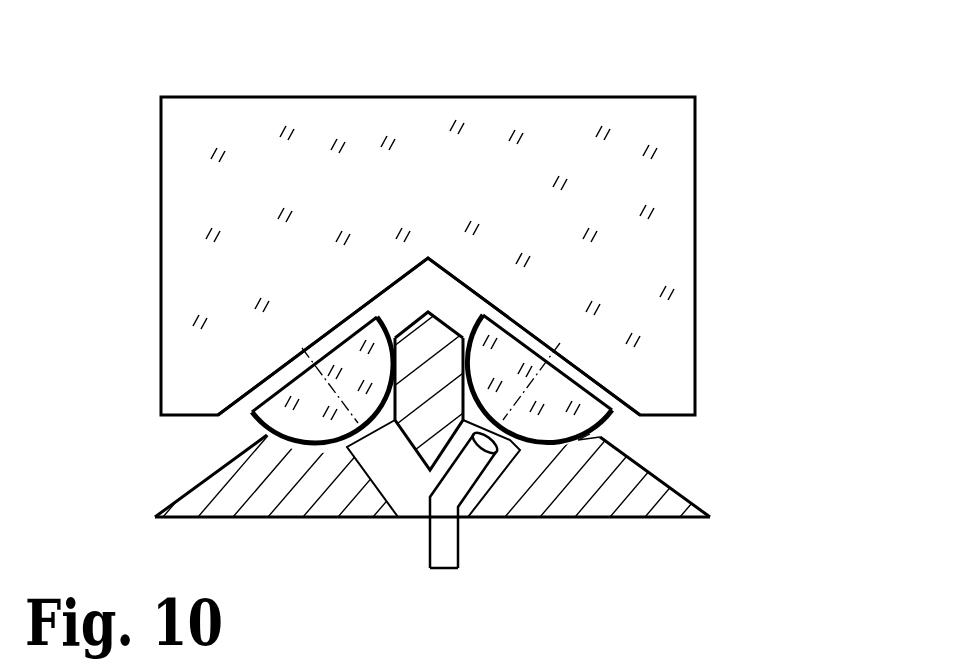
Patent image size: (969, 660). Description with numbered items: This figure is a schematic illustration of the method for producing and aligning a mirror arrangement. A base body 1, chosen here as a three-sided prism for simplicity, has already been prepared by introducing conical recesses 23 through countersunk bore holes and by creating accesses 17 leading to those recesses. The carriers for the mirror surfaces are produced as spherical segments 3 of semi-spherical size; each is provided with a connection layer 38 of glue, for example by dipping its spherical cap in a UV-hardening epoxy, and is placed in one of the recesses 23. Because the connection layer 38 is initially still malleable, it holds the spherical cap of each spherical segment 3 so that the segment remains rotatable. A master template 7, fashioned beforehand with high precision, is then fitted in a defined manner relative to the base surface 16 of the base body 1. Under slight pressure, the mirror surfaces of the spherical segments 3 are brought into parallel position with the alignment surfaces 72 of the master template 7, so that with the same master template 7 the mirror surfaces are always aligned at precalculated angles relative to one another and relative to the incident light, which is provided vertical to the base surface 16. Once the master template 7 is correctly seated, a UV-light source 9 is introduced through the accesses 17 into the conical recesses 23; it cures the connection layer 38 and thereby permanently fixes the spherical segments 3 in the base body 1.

The master template 7 is at (650, 130).
The alignment surfaces 72 is at (523, 323).
The spherical segments 3 is at (563, 388).
The connection layer 38 is at (585, 436).
The base body 1 is at (637, 494).
The base surface 16 is at (600, 517).
The conical recesses 23 is at (465, 517).
The accesses 17 is at (368, 467).
The UV-light source 9 is at (442, 518).